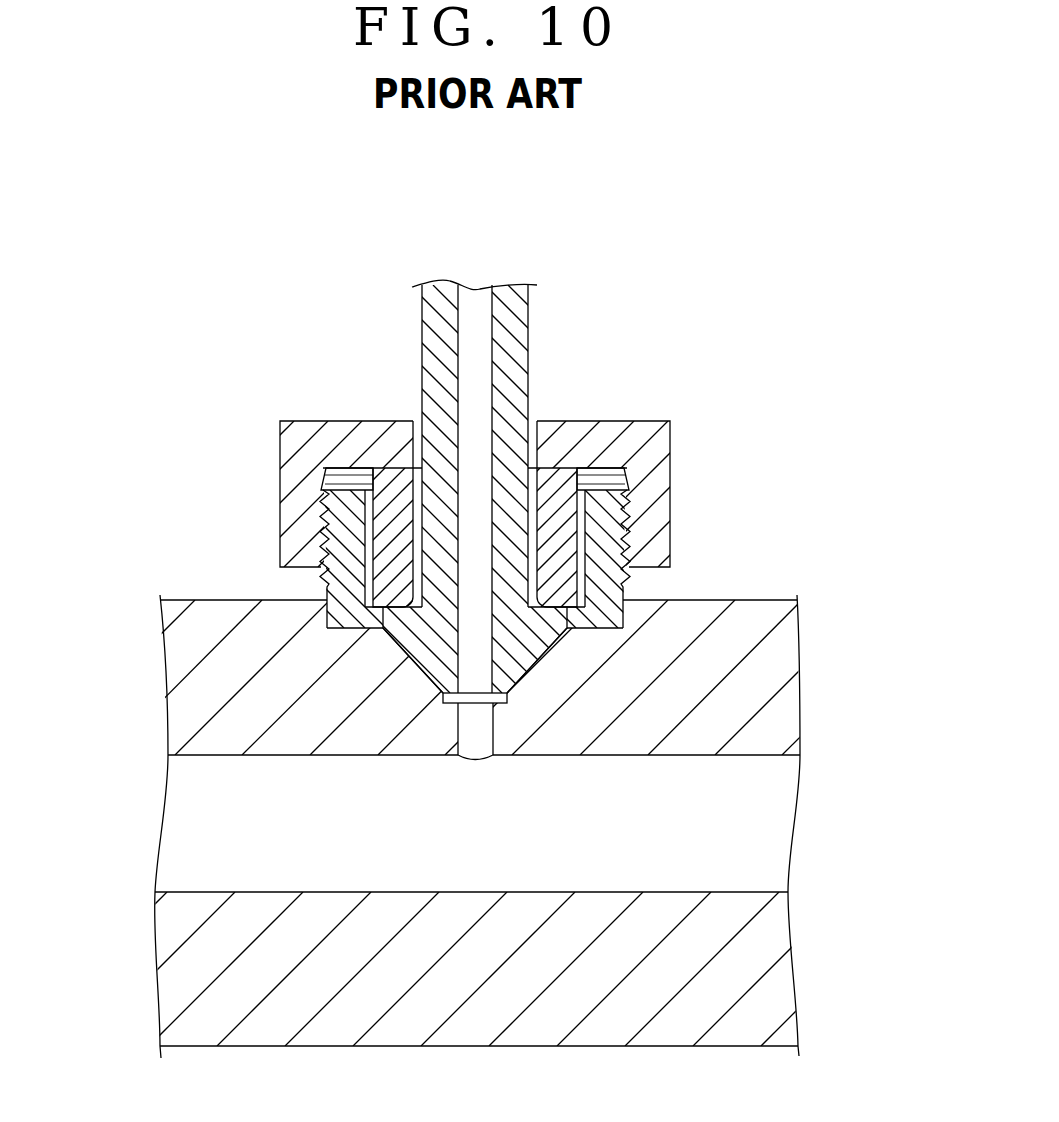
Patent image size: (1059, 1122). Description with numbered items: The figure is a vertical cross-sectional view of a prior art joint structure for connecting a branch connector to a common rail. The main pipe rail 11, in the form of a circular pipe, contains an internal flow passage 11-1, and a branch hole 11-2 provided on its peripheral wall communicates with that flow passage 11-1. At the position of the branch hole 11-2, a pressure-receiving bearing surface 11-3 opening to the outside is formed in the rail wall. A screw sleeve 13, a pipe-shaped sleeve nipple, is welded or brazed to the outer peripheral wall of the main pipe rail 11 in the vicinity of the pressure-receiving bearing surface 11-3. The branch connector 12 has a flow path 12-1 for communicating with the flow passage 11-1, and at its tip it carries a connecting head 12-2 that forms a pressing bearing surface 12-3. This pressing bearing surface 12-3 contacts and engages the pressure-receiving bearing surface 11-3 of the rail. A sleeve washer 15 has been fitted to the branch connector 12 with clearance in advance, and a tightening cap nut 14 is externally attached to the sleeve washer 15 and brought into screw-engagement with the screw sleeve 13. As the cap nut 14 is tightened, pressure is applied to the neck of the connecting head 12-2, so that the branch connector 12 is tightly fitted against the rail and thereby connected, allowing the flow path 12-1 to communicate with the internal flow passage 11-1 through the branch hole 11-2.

The main pipe rail 11 is at (783, 647).
The internal flow passage 11-1 is at (743, 753).
The branch hole 11-2 is at (480, 722).
The pressure-receiving bearing surface 11-3 is at (558, 640).
The branch connector 12 is at (513, 321).
The flow path 12-1 is at (470, 313).
The connecting head 12-2 is at (433, 652).
The pressing bearing surface 12-3 is at (440, 650).
The screw sleeve 13 is at (345, 587).
The tightening cap nut 14 is at (648, 447).
The sleeve washer 15 is at (568, 543).